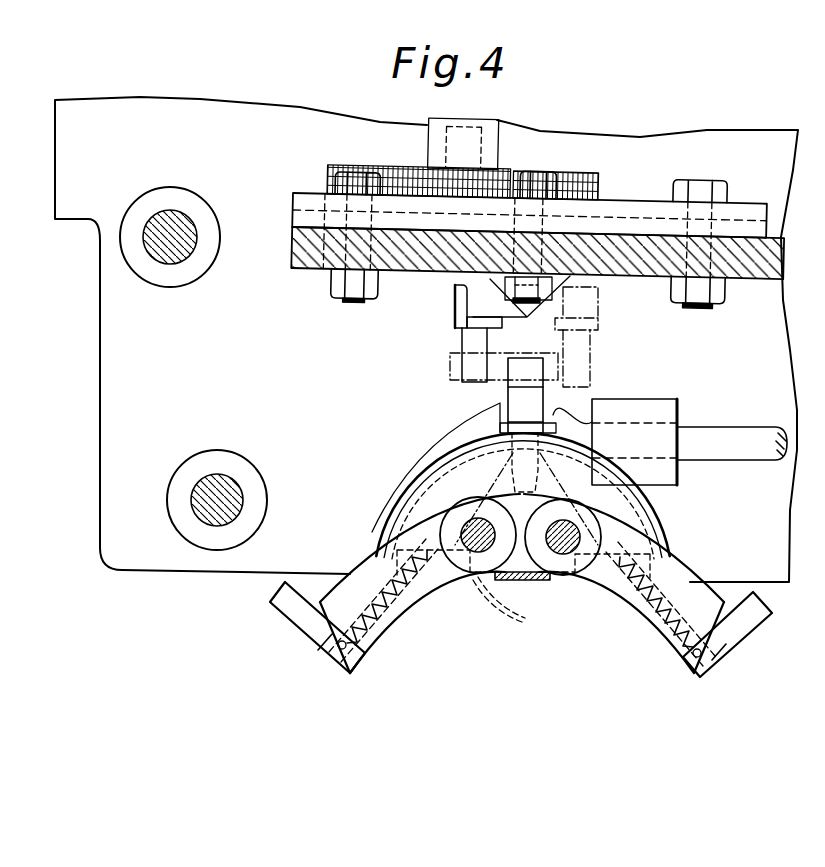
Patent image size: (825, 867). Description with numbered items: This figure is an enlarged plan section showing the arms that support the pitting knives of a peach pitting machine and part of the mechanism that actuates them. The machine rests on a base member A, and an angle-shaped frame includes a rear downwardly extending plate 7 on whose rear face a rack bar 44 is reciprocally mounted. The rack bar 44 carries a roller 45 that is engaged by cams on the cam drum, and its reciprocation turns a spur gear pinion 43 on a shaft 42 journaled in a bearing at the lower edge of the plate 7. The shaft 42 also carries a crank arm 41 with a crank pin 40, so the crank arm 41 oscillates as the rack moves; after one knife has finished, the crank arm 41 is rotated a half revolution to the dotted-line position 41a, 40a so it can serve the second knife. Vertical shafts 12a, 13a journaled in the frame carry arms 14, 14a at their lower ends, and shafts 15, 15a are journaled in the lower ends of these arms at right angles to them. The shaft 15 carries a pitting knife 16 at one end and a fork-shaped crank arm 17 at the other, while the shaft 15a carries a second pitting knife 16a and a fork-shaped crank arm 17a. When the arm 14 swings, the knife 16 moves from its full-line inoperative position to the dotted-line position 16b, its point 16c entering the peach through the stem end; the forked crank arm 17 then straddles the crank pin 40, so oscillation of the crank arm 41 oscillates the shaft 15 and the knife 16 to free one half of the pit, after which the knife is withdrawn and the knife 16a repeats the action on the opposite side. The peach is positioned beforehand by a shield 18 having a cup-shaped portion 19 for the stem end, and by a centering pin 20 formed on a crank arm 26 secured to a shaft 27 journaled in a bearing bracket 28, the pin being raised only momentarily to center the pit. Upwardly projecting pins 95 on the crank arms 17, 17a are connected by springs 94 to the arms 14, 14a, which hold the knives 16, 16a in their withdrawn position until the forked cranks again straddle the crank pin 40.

The base member A is at (118, 343).
The rear downwardly extending plate 7 is at (300, 268).
The rack bar 44 is at (390, 190).
The spur gear pinion 43 is at (549, 193).
The roller 45 is at (498, 118).
The shaft 42 is at (540, 227).
The crank arm 41 is at (458, 310).
The dotted-line position of crank arm 41a is at (600, 320).
The crank pin 40 is at (470, 346).
The dotted-line position of crank pin 40a is at (593, 347).
The fork-shaped crank arm 17 is at (452, 368).
The crank arm 26 is at (518, 377).
The cup-shaped portion 19 is at (497, 447).
The bearing bracket 28 is at (662, 401).
The shaft 27 is at (715, 433).
The pitting knife 16 is at (657, 524).
The pitting knife 16a is at (400, 482).
The dotted-line position of pitting knife 16b is at (418, 456).
The point of pitting blade 16c is at (511, 630).
The shield 18 is at (523, 516).
The centering pin 20 is at (538, 494).
The arm 14a is at (422, 592).
The arm 14 is at (642, 628).
The shaft 13a is at (477, 518).
The shaft 12a is at (566, 556).
The spring 94 is at (388, 617).
The rod or pin 95 is at (350, 652).
The fork-shaped crank arm 17a is at (293, 610).
The shaft 15a is at (335, 652).
The shaft 15 is at (704, 664).